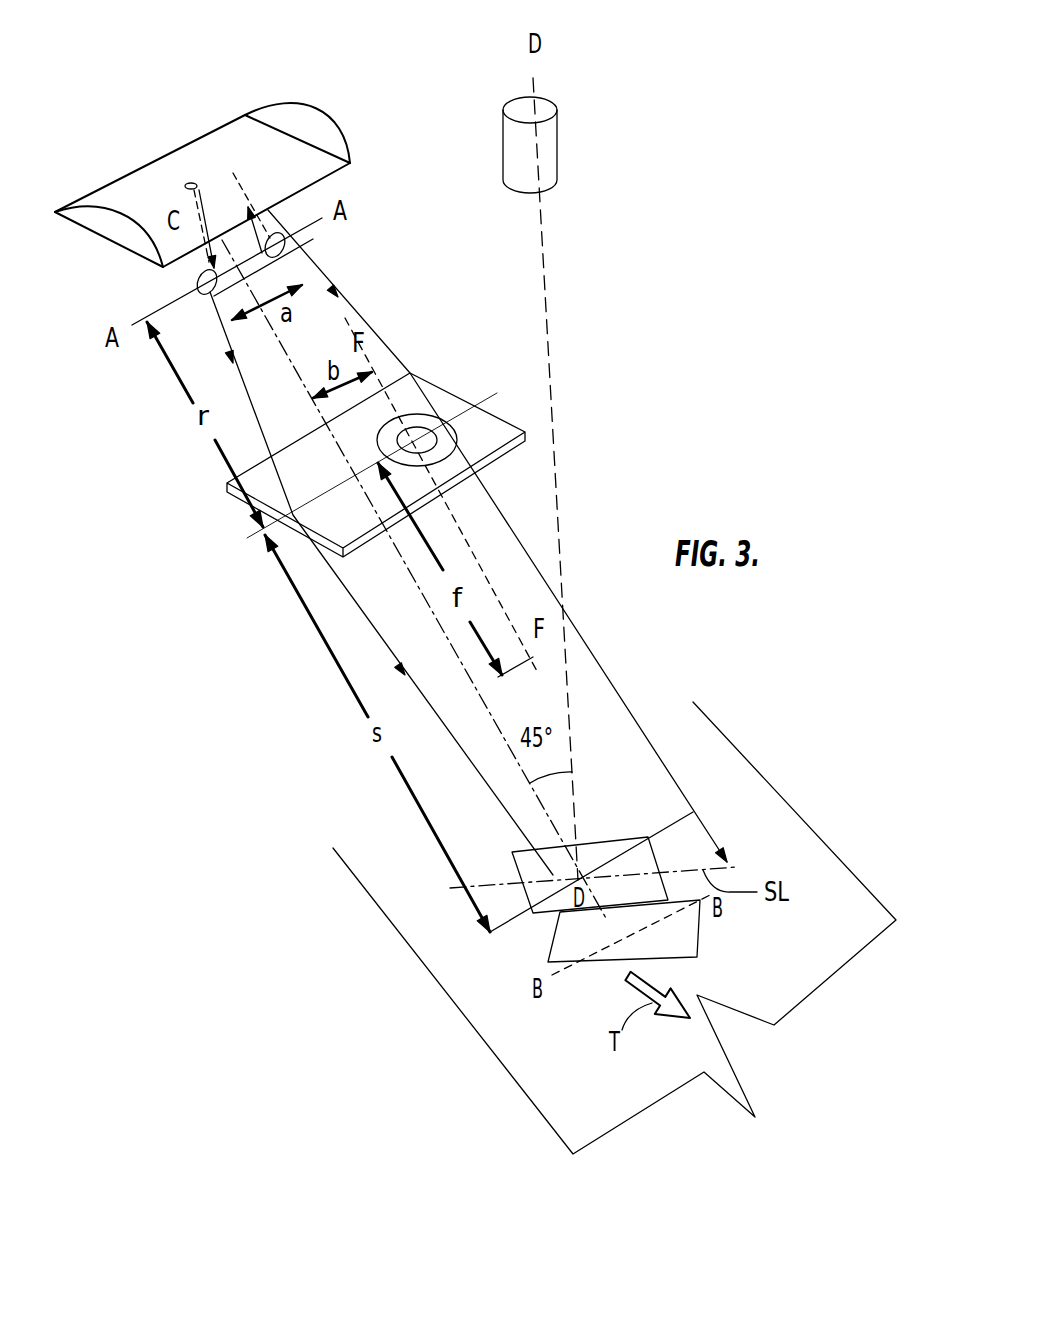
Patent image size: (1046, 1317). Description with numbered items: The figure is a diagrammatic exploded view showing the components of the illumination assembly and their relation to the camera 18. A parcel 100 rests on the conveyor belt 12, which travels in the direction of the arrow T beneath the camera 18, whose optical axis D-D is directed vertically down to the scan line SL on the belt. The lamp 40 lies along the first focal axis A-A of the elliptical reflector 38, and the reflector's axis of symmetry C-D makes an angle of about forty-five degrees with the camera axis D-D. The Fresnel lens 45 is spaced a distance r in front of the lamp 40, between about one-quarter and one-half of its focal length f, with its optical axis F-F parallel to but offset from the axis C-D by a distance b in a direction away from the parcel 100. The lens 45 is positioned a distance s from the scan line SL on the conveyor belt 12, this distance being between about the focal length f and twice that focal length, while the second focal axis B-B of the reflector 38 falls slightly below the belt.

The reflector 38 is at (295, 101).
The lamp 40 is at (203, 291).
The Fresnel lens 45 is at (258, 493).
The camera 18 is at (545, 187).
The parcel 100 is at (513, 857).
The conveyor belt 12 is at (503, 1047).